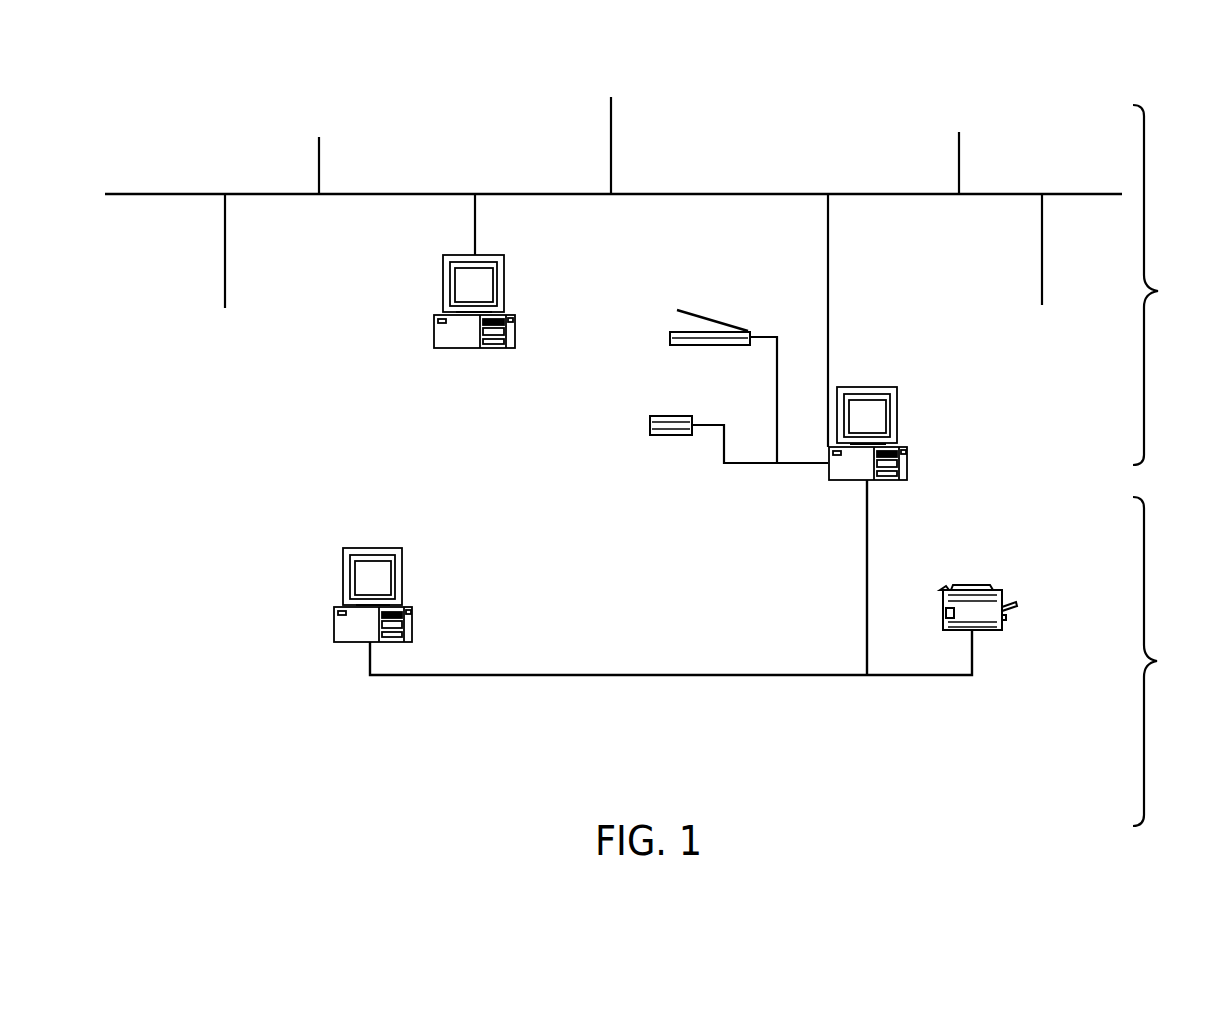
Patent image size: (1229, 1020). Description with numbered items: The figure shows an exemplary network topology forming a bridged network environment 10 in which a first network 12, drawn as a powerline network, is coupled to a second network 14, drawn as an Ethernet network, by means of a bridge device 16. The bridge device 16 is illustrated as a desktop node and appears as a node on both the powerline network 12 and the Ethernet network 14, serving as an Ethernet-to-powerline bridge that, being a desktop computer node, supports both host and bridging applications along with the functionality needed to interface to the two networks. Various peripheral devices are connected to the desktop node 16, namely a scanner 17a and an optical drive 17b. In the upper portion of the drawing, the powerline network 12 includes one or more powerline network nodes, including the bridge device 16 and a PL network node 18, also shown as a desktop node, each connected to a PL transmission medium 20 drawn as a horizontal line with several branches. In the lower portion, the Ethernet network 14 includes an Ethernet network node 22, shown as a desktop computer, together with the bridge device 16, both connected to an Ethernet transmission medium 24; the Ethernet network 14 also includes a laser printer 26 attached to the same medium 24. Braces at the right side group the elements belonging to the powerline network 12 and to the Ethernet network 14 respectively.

The bridged network environment 10 is at (1025, 87).
The first network 12 is at (1159, 291).
The second network 14 is at (1158, 661).
The bridge device 16 is at (863, 385).
The scanner 17a is at (724, 323).
The optical drive 17b is at (693, 415).
The PL network node 18 is at (443, 285).
The PL transmission medium 20 is at (248, 190).
The Ethernet network node 22 is at (343, 590).
The Ethernet transmission medium 24 is at (708, 680).
The laser printer 26 is at (1016, 607).